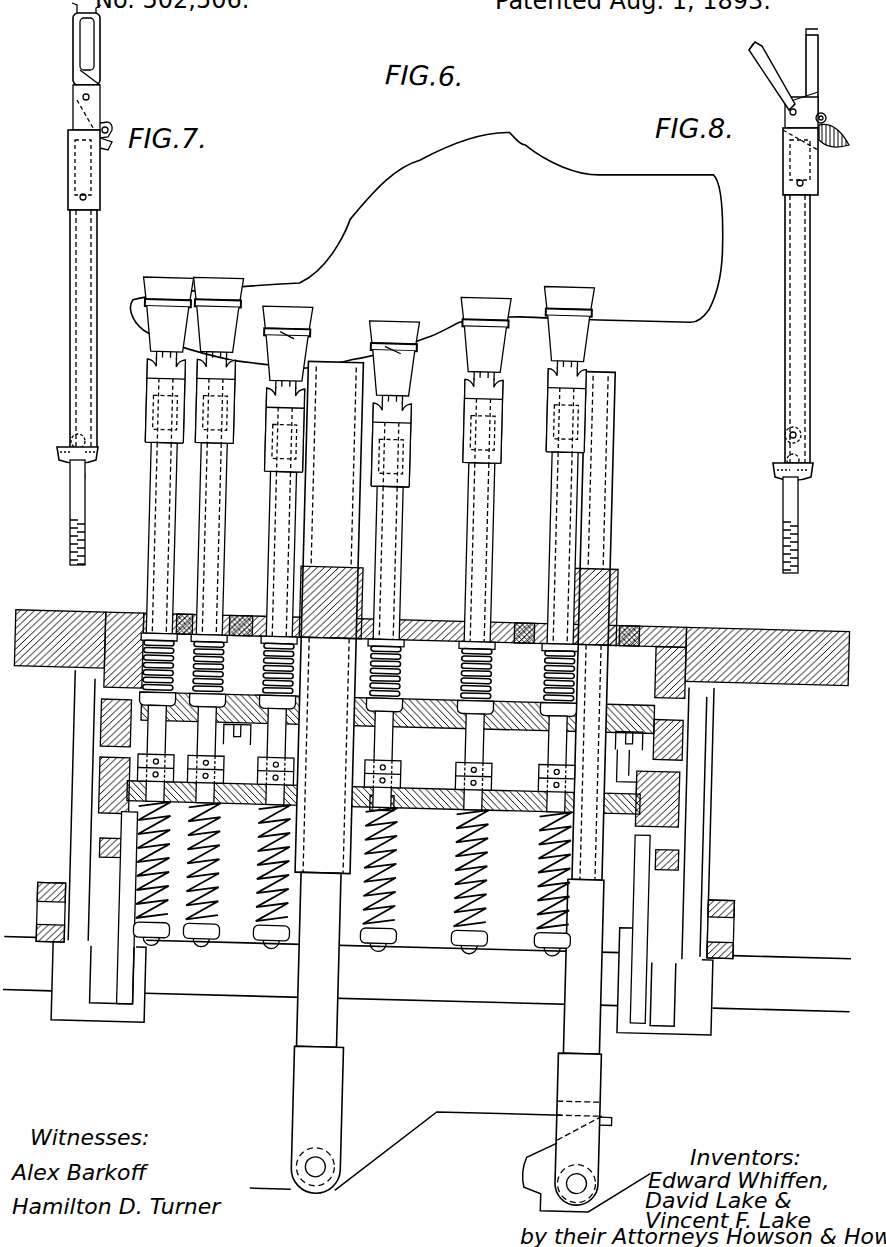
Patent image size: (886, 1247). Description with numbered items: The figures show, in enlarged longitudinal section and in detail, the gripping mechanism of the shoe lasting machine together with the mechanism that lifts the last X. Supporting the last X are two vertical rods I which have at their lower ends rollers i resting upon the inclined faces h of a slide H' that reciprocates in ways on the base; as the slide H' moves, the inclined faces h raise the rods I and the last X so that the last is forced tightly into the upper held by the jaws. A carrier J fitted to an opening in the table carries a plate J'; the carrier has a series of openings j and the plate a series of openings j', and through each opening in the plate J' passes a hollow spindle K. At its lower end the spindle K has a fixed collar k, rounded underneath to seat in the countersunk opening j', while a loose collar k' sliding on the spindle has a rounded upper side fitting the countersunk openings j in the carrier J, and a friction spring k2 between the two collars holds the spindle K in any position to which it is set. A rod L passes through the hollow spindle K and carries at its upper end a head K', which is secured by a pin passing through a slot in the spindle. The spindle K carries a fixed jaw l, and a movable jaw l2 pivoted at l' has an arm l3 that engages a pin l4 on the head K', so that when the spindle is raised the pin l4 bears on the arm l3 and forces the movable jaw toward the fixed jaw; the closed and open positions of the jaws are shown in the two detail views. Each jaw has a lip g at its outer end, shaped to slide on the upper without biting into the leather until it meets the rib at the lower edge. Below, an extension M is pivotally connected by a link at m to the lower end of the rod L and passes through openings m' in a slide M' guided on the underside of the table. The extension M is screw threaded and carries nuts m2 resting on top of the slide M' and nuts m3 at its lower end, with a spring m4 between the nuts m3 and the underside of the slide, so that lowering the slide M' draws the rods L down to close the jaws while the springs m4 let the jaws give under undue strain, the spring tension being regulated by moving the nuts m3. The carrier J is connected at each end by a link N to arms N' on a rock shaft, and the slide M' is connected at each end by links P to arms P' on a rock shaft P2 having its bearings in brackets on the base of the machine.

In FIG. 6, the last X is at (427, 251).
In FIG. 6, the carrier J is at (429, 732).
In FIG. 6, the plate J' is at (398, 704).
In FIG. 6, the openings in carrier j is at (211, 611).
In FIG. 6, the openings in plate j' is at (577, 622).
In FIG. 6, the hollow spindle K is at (374, 517).
In FIG. 7, the hollow spindle K is at (75, 330).
In FIG. 8, the hollow spindle K is at (787, 329).
In FIG. 6, the head K' is at (365, 423).
In FIG. 7, the head K' is at (99, 173).
In FIG. 8, the head K' is at (793, 161).
In FIG. 6, the rod L is at (212, 578).
In FIG. 7, the rod L is at (97, 301).
In FIG. 8, the rod L is at (805, 356).
In FIG. 6, the fixed jaw l is at (368, 319).
In FIG. 7, the fixed jaw l is at (95, 49).
In FIG. 8, the fixed jaw l is at (807, 81).
In FIG. 7, the pivot l' is at (77, 112).
In FIG. 8, the pivot l' is at (780, 117).
In FIG. 6, the movable jaw l2 is at (289, 339).
In FIG. 7, the movable jaw l2 is at (73, 49).
In FIG. 8, the movable jaw l2 is at (772, 83).
In FIG. 7, the arm l3 is at (112, 145).
In FIG. 8, the arm l3 is at (835, 133).
In FIG. 7, the pin l4 is at (106, 127).
In FIG. 8, the pin l4 is at (825, 115).
In FIG. 6, the lip g is at (331, 348).
In FIG. 7, the lip g is at (88, 7).
In FIG. 8, the lip g is at (784, 29).
In FIG. 7, the fixed collar k is at (83, 449).
In FIG. 8, the fixed collar k is at (799, 454).
In FIG. 6, the loose collar k' is at (359, 652).
In FIG. 6, the friction spring k2 is at (580, 666).
In FIG. 7, the link pivot m is at (90, 480).
In FIG. 8, the link pivot m is at (802, 483).
In FIG. 6, the openings in slide m' is at (406, 812).
In FIG. 6, the nuts m2 is at (229, 765).
In FIG. 6, the nuts m3 is at (493, 931).
In FIG. 6, the spring m4 is at (489, 860).
In FIG. 6, the extension M is at (356, 801).
In FIG. 7, the extension M is at (88, 512).
In FIG. 8, the extension M is at (805, 525).
In FIG. 6, the slide M' is at (383, 814).
In FIG. 6, the link N is at (390, 815).
In FIG. 6, the arms N' is at (385, 909).
In FIG. 6, the links P is at (383, 917).
In FIG. 6, the arms P' is at (382, 975).
In FIG. 6, the rock shaft P2 is at (427, 974).
In FIG. 6, the vertical rods I is at (458, 783).
In FIG. 6, the inclined faces h is at (403, 1140).
In FIG. 6, the slide H' is at (406, 1151).
In FIG. 6, the rollers i is at (328, 1192).